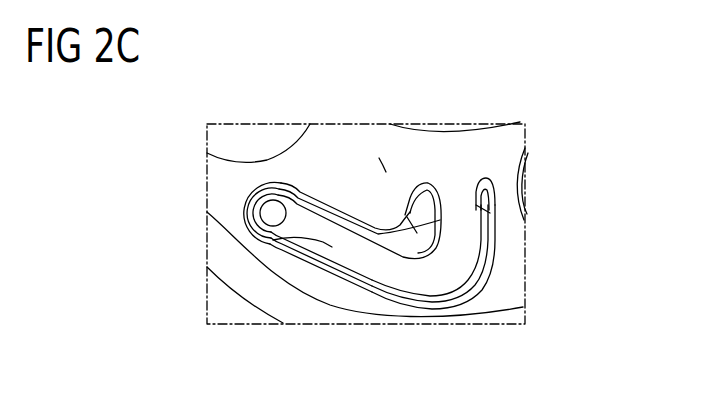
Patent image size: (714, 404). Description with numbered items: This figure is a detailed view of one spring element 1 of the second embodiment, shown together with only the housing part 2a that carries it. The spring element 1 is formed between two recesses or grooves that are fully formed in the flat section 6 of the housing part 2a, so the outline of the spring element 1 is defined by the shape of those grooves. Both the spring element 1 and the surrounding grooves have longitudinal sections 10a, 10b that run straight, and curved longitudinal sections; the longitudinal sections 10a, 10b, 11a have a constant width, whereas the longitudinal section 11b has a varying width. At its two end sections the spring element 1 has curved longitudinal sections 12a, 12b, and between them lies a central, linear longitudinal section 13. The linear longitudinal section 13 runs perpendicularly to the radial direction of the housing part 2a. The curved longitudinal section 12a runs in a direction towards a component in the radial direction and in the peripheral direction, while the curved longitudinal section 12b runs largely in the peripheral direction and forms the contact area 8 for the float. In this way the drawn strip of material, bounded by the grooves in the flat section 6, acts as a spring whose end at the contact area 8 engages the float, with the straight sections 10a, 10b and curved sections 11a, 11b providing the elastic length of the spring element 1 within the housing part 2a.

The spring element 1 is at (395, 270).
The housing part 2a is at (518, 104).
The flat section 6 is at (379, 158).
The contact area 8 is at (262, 222).
The longitudinal section 10a is at (305, 265).
The longitudinal section 10b is at (333, 222).
The longitudinal section 11a is at (477, 262).
The longitudinal section 11b is at (408, 242).
The curved longitudinal section 12a is at (463, 220).
The curved longitudinal section 12b is at (269, 217).
The linear longitudinal section 13 is at (287, 243).